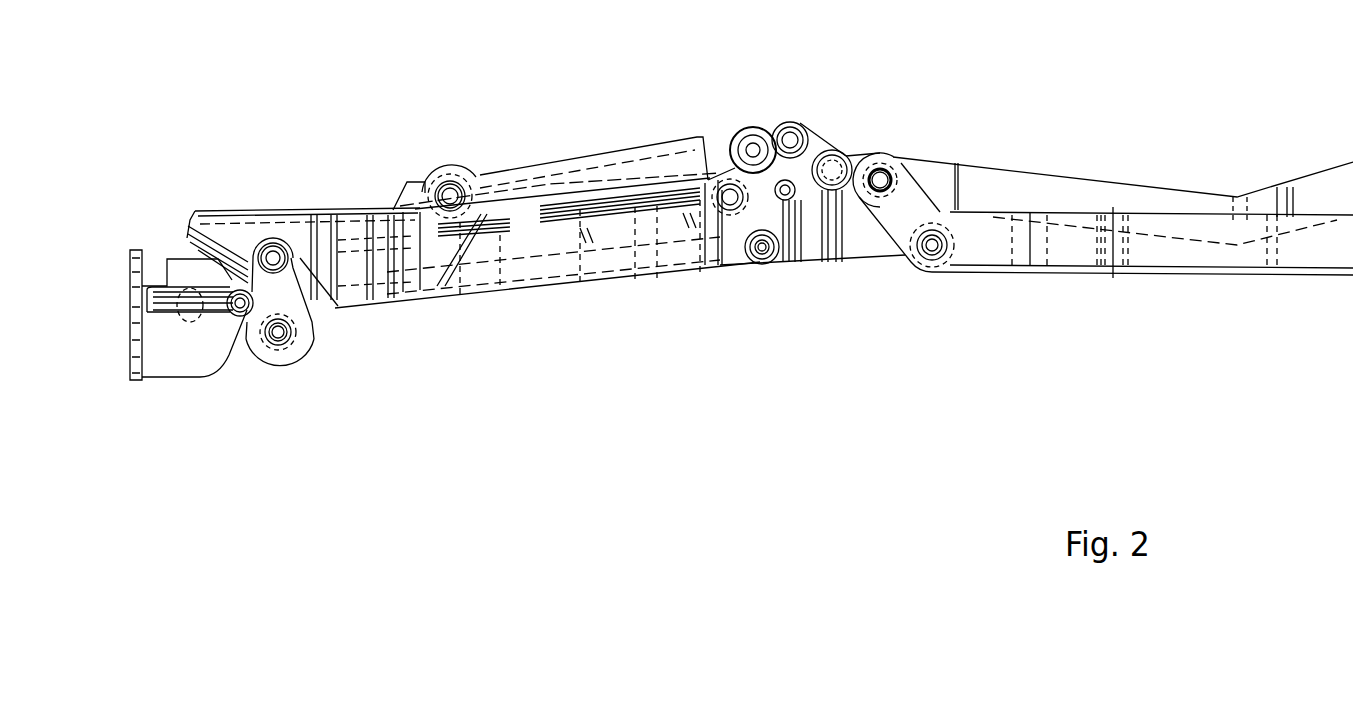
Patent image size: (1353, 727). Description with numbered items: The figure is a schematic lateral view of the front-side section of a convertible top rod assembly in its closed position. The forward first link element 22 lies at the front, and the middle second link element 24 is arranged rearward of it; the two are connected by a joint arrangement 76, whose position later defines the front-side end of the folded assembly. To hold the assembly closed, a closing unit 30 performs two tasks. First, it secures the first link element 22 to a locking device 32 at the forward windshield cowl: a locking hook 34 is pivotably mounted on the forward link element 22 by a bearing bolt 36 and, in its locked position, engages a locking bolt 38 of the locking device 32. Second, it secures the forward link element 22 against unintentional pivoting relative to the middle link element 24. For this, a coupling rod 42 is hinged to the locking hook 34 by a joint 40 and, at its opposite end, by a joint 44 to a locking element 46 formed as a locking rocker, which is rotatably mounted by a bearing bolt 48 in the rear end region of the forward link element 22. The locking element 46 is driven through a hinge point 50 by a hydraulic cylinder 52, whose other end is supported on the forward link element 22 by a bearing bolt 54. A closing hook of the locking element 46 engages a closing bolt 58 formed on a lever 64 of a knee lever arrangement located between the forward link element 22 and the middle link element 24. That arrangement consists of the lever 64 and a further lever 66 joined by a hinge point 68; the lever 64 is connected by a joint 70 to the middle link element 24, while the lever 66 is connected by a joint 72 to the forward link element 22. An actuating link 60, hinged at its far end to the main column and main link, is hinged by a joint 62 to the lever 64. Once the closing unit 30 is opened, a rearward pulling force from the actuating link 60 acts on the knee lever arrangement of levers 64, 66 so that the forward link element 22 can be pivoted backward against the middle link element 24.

The first link element 22 is at (572, 277).
The second link element 24 is at (1267, 278).
The closing unit 30 is at (678, 137).
The locking device 32 is at (183, 363).
The locking hook 34 is at (247, 347).
The bearing bolt 36 is at (270, 248).
The locking bolt 38 is at (200, 265).
The joint 40 is at (278, 328).
The coupling rod 42 is at (307, 300).
The joint 44 is at (725, 200).
The locking element 46 is at (807, 207).
The bearing bolt 48 is at (834, 160).
The hinge point 50 is at (790, 142).
The hydraulic cylinder 52 is at (585, 150).
The bearing bolt 54 is at (445, 191).
The closing bolt 58 is at (839, 210).
The actuating link 60 is at (1063, 192).
The joint 62 is at (840, 168).
The lever 64 is at (880, 235).
The lever 66 is at (748, 265).
The hinge point 68 is at (752, 150).
The joint 70 is at (932, 245).
The joint 72 is at (767, 257).
The joint arrangement 76 is at (883, 173).